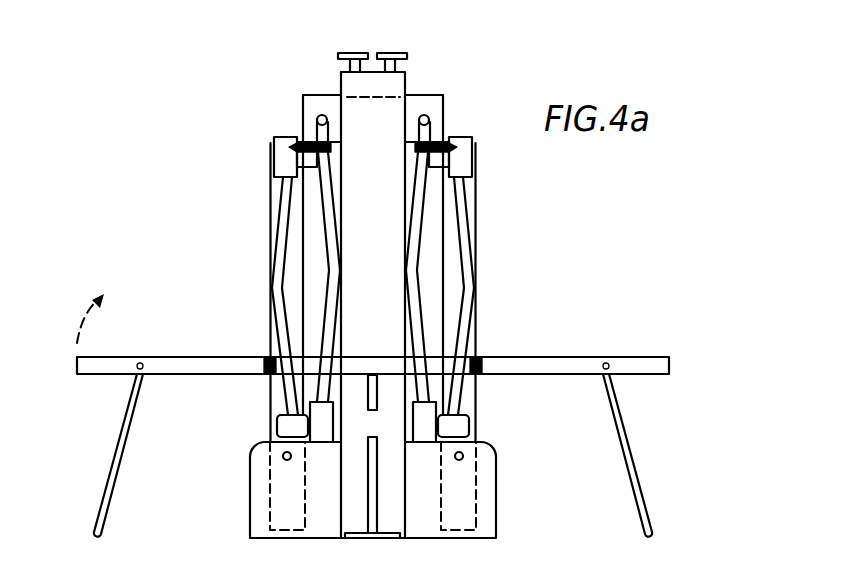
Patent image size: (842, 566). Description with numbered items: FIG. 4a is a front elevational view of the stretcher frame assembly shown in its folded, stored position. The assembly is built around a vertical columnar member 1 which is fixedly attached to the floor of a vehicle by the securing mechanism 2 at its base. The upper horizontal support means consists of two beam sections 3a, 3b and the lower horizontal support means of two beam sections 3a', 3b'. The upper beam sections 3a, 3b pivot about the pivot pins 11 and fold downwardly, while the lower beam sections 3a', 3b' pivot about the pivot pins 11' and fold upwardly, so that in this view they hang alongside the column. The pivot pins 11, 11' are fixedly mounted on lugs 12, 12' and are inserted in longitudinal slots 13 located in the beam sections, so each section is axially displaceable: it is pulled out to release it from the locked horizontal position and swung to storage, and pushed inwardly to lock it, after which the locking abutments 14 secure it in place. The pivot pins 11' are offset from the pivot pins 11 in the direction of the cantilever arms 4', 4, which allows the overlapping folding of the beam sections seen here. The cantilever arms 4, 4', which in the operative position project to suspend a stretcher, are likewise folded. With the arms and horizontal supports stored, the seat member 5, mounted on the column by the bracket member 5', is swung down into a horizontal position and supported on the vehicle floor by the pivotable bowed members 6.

The vertical columnar member 1 is at (360, 216).
The securing mechanism 2 is at (373, 505).
The beam section 3a is at (267, 232).
The beam section 3a' is at (262, 362).
The beam section 3b is at (493, 226).
The beam section 3b' is at (491, 355).
The cantilever arm 4 is at (373, 297).
The cantilever arm 4' is at (379, 289).
The seat member 5 is at (373, 334).
The bracket member 5' is at (385, 403).
The pivotable bowed member 6 is at (122, 445).
The pivot pin 11 is at (372, 120).
The pivot pin 11' is at (372, 439).
The lug 12 is at (373, 240).
The lug 12' is at (375, 486).
The longitudinal slot 13 is at (305, 138).
The locking abutment 14 is at (394, 52).